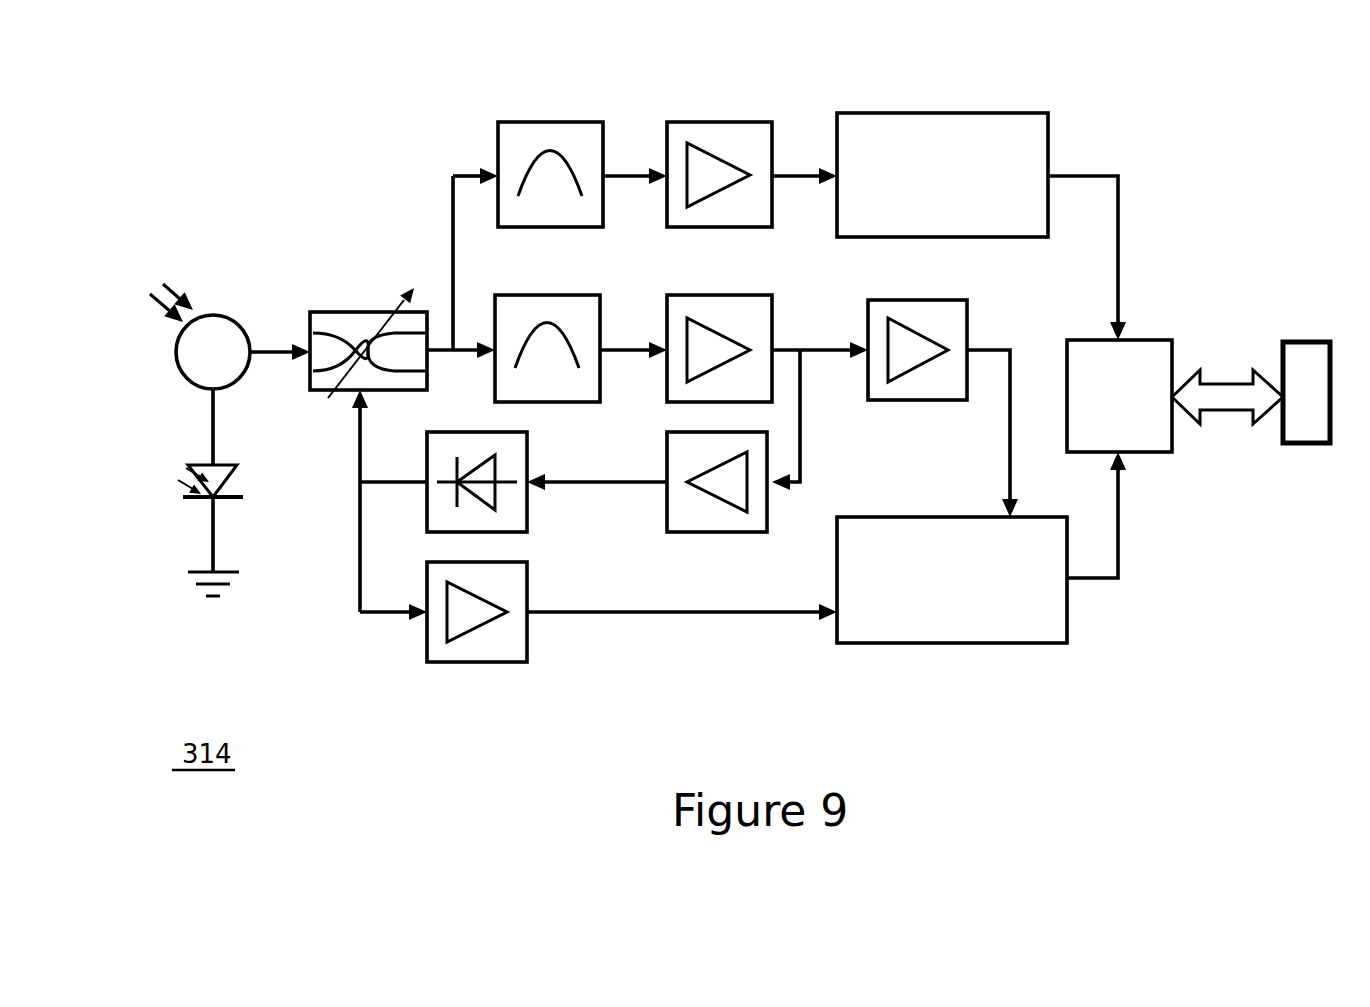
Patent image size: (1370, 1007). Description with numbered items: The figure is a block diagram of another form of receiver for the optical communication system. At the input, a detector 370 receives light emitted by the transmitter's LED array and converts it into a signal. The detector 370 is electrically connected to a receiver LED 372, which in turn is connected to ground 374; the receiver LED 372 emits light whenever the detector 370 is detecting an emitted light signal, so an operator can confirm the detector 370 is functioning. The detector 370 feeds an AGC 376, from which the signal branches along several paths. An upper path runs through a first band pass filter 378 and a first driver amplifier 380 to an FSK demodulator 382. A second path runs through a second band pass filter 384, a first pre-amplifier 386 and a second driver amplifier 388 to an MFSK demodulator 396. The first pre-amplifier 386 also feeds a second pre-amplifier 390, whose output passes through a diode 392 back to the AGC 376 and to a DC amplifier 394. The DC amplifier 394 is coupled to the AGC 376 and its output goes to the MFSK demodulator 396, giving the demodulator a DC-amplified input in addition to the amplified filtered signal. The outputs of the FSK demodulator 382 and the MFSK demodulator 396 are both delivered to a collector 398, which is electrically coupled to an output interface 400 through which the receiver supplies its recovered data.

The detector 370 is at (190, 384).
The receiver LED 372 is at (196, 500).
The ground 374 is at (210, 598).
The AGC 376 is at (325, 312).
The first band pass filter 378 is at (523, 122).
The first driver amplifier 380 is at (698, 122).
The FSK demodulator 382 is at (952, 113).
The second band pass filter 384 is at (522, 295).
The first pre-amplifier 386 is at (703, 295).
The second driver amplifier 388 is at (903, 300).
The second pre-amplifier 390 is at (680, 432).
The diode 392 is at (460, 432).
The DC amplifier 394 is at (480, 662).
The MFSK demodulator 396 is at (938, 643).
The collector 398 is at (1145, 450).
The output interface 400 is at (1312, 443).